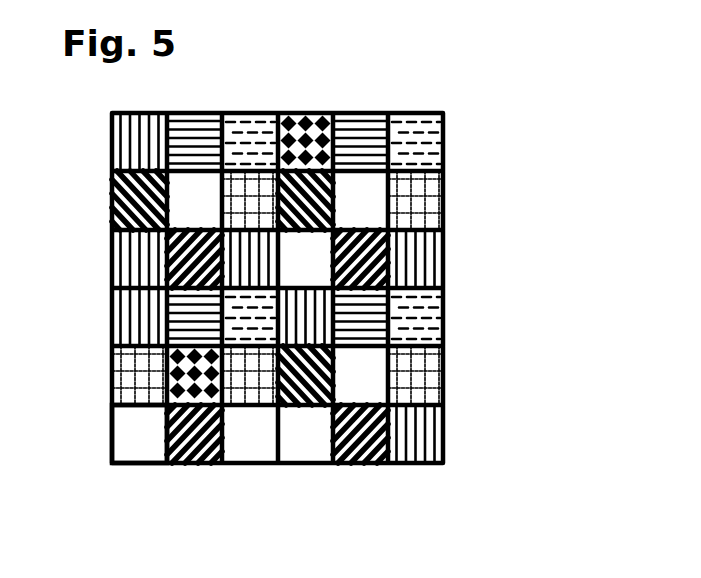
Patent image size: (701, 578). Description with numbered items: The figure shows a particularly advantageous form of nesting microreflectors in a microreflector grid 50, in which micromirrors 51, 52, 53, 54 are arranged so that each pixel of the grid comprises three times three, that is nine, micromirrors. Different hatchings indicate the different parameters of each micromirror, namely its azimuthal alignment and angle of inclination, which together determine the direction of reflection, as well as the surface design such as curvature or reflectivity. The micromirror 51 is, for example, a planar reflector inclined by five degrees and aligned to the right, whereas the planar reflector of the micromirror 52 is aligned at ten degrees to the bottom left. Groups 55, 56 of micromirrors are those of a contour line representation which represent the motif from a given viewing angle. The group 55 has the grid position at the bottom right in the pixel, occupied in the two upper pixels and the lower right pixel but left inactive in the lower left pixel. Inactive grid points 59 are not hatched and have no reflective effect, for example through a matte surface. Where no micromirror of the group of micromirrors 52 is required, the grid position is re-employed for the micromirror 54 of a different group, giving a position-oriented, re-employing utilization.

The microreflector grid 50 is at (545, 145).
The micromirror 51 is at (128, 142).
The micromirror 52 is at (126, 203).
The microreflector 53 is at (199, 145).
The micromirror 54 is at (135, 373).
The group of micromirrors 55 is at (436, 440).
The group of micromirrors 56 is at (195, 438).
The inactive grid point 59 is at (128, 440).